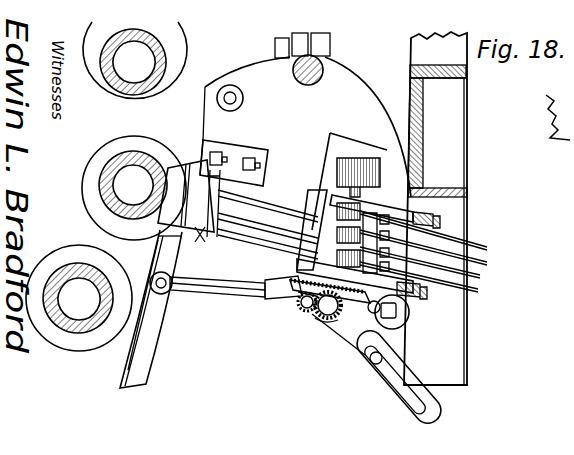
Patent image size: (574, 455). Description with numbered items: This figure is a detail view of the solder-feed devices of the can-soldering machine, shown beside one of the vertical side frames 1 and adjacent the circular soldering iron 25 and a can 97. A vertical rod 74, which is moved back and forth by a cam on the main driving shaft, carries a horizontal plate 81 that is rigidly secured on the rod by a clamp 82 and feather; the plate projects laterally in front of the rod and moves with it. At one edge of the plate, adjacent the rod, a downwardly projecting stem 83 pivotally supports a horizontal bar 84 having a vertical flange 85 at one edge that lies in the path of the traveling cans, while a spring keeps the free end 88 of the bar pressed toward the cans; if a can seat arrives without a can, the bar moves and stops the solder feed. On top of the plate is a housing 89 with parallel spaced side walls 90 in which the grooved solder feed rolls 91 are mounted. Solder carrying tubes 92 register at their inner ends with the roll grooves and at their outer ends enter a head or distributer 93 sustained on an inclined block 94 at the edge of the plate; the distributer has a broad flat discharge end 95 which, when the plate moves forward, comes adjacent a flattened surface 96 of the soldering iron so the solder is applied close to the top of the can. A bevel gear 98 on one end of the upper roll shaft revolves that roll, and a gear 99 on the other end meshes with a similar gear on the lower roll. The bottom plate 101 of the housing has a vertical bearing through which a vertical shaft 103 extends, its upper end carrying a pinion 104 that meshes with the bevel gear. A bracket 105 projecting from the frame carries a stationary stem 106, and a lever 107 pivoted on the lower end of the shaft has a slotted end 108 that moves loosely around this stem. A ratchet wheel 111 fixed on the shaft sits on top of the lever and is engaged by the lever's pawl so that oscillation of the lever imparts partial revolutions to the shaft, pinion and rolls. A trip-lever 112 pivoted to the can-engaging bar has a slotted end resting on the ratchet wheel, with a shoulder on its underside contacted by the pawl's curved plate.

The side frame 1 is at (449, 142).
The soldering iron 25 is at (73, 268).
The vertical rod 74 is at (313, 84).
The horizontal plate 81 is at (370, 100).
The clamp 82 is at (280, 49).
The stem 83 is at (228, 90).
The horizontal bar 84 is at (176, 247).
The vertical flange 85 is at (134, 330).
The free end 88 is at (135, 382).
The housing 89 is at (350, 200).
The side wall 90 is at (415, 213).
The solder feed roll 91 is at (318, 258).
The solder carrying tube 92 is at (270, 203).
The distributer 93 is at (198, 233).
The inclined block 94 is at (207, 143).
The discharge end 95 is at (186, 168).
The flattened surface 96 is at (166, 188).
The can 97 is at (110, 102).
The bevel gear 98 is at (357, 300).
The gear 99 is at (360, 200).
The bottom plate 101 is at (405, 326).
The vertical shaft 103 is at (324, 305).
The pinion 104 is at (310, 308).
The bracket 105 is at (450, 347).
The stationary stem 106 is at (372, 365).
The lever 107 is at (337, 338).
The slotted end 108 is at (389, 400).
The ratchet wheel 111 is at (305, 303).
The trip-lever 112 is at (241, 292).